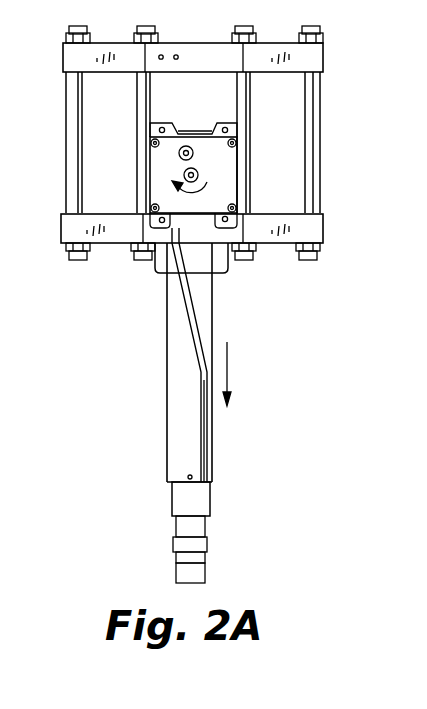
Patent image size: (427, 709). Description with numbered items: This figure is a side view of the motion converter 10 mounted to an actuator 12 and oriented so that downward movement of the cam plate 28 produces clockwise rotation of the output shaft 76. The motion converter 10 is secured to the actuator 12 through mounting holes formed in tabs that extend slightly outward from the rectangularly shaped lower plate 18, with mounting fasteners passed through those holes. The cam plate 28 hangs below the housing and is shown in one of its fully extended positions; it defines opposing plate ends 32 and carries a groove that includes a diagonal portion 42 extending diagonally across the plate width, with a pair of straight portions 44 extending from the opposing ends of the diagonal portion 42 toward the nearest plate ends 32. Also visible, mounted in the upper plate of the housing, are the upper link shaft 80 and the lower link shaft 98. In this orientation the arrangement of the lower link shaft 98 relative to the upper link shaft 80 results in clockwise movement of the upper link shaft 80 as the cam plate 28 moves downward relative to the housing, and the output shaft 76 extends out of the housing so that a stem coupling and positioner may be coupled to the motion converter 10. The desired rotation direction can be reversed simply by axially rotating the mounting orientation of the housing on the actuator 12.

The motion converter 10 is at (160, 165).
The actuator 12 is at (324, 56).
The lower plate 18 is at (235, 218).
The cam plate 28 is at (177, 410).
The plate ends 32 is at (172, 483).
The diagonal portion 42 is at (193, 317).
The straight portions 44 is at (207, 440).
The output shaft 76 is at (295, 183).
The upper link shaft 80 is at (198, 174).
The lower link shaft 98 is at (193, 153).